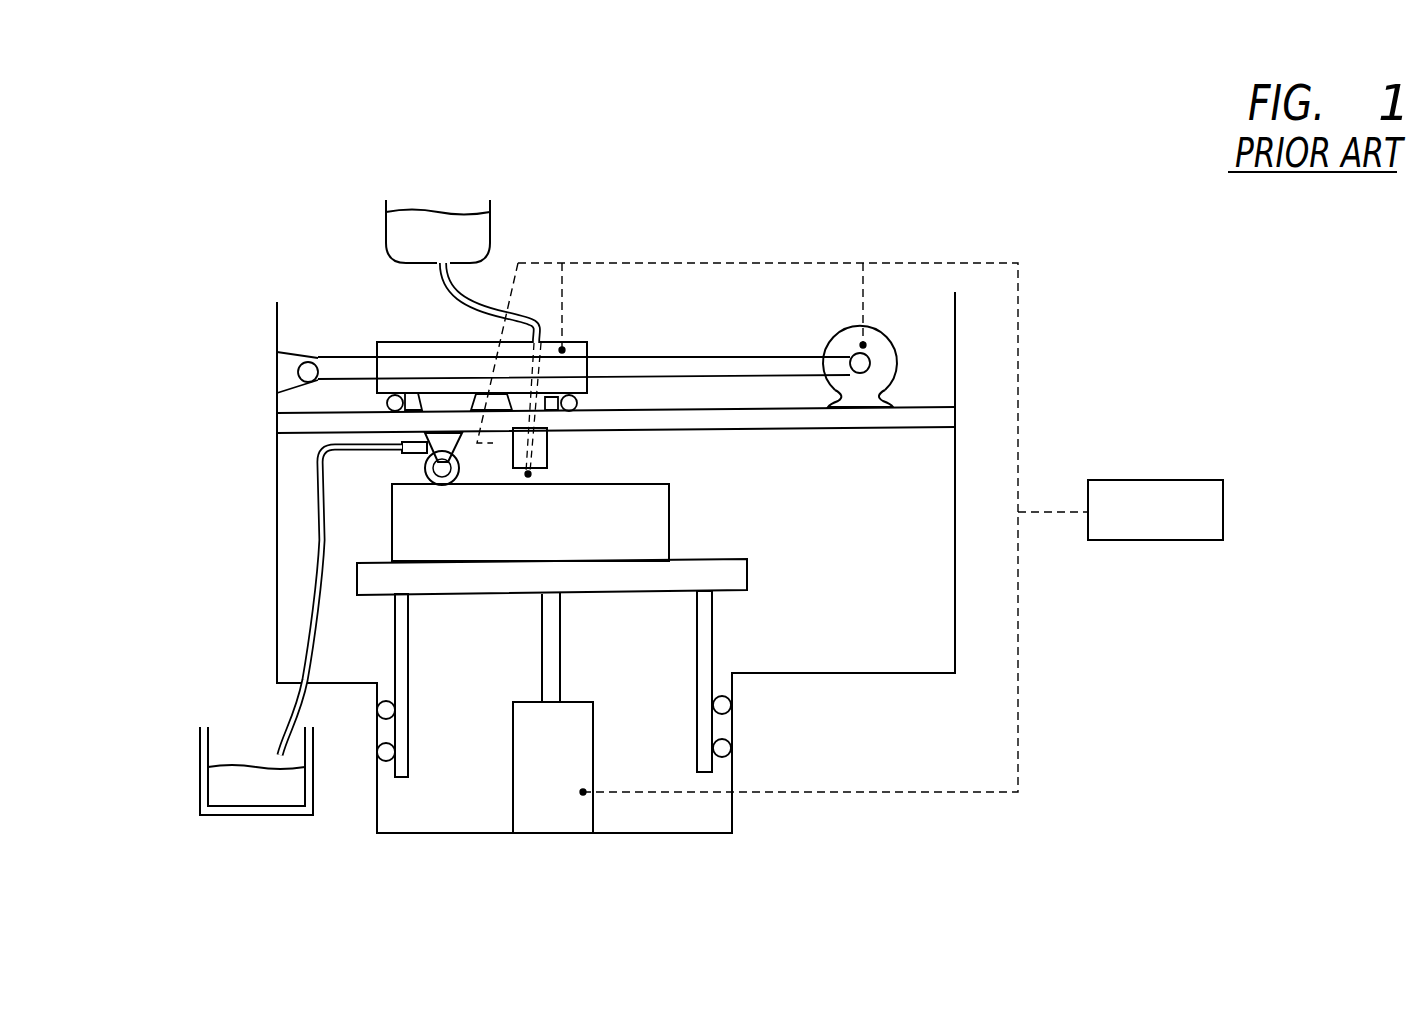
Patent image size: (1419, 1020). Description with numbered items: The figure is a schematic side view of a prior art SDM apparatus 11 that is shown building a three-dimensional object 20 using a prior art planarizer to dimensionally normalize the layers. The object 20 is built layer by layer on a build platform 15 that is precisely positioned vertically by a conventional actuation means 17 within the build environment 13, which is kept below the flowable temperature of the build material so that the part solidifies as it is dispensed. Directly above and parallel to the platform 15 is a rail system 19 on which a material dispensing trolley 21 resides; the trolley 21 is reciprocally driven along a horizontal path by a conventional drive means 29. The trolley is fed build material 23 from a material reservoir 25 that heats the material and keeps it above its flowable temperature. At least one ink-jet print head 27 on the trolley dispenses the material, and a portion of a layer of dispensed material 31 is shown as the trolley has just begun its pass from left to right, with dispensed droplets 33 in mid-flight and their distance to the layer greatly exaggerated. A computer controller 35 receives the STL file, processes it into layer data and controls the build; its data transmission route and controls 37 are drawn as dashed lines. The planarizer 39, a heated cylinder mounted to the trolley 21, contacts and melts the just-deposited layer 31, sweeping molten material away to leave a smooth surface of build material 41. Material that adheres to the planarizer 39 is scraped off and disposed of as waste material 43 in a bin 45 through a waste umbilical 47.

The SDM apparatus 11 is at (232, 229).
The build environment 13 is at (704, 484).
The build platform 15 is at (747, 575).
The actuation means 17 is at (533, 767).
The rail system 19 is at (872, 428).
The three-dimensional object 20 is at (640, 517).
The material dispensing trolley 21 is at (424, 341).
The build material 23 is at (450, 226).
The material reservoir 25 is at (386, 221).
The ink-jet print head 27 is at (547, 450).
The drive means 29 is at (838, 347).
The layer of dispensed material 31 is at (490, 478).
The dispensed droplets 33 is at (530, 474).
The computer controller 35 is at (1155, 540).
The data transmission route and controls 37 is at (623, 264).
The planarizer 39 is at (460, 487).
The smooth surface of build material 41 is at (414, 478).
The waste material 43 is at (251, 787).
The bin 45 is at (198, 752).
The waste umbilical 47 is at (312, 597).